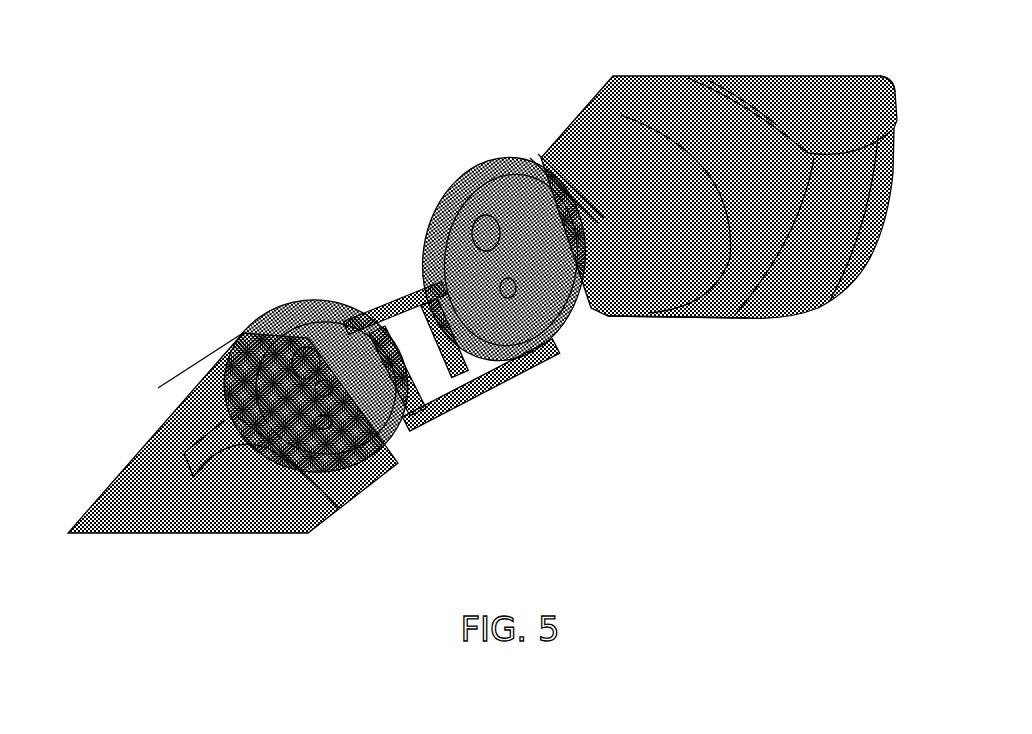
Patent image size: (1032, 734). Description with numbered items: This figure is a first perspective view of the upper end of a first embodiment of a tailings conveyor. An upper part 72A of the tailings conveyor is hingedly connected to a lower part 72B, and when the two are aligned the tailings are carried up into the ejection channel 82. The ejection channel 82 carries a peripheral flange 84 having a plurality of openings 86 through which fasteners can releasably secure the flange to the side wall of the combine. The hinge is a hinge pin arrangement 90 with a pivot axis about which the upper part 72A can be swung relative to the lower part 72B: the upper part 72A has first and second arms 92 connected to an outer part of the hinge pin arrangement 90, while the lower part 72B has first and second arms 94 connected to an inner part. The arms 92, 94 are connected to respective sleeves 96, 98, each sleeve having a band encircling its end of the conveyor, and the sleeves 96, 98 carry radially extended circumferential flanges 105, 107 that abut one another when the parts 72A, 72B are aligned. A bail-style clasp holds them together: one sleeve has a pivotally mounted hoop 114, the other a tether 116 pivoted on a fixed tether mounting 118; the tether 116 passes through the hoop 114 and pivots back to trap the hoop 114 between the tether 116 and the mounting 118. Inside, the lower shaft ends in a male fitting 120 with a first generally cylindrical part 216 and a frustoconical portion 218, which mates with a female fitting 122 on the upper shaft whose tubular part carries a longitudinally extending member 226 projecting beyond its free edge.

The upper part of the tailings conveyor 72A is at (667, 250).
The lower part of the tailings conveyor 72B is at (108, 489).
The ejection channel 82 is at (850, 225).
The peripheral flange 84 is at (745, 100).
The openings 86 is at (879, 86).
The hinge pin arrangement 90 is at (446, 351).
The first and second arms 92 is at (415, 283).
The first and second arms 94 is at (356, 312).
The sleeve 96 is at (603, 312).
The sleeve 98 is at (195, 388).
The circumferential flange 105 is at (470, 156).
The circumferential flange 107 is at (259, 298).
The hoop 114 is at (522, 170).
The tether 116 is at (183, 460).
The tether mounting 118 is at (322, 492).
The male fitting 120 is at (326, 379).
The female fitting 122 is at (498, 278).
The first generally cylindrical part 216 is at (323, 416).
The generally frustoconical portion 218 is at (306, 353).
The longitudinally extending member 226 is at (470, 226).